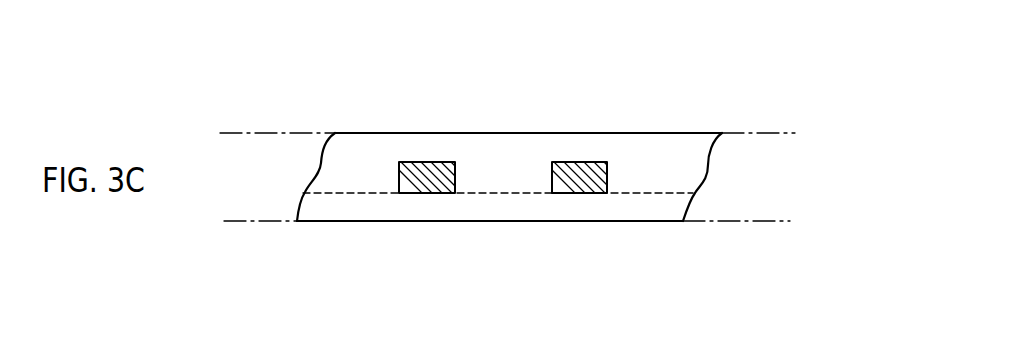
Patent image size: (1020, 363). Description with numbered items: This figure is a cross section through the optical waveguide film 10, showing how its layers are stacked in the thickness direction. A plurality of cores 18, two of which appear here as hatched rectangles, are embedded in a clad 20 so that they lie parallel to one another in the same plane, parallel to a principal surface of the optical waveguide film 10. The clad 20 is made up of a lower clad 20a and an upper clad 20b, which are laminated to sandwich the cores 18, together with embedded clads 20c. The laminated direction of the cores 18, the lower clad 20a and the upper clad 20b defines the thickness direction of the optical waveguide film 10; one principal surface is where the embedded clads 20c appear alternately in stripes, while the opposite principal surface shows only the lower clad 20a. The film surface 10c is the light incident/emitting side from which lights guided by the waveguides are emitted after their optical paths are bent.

The optical waveguide film 10 is at (507, 118).
The film surface 10c is at (500, 221).
The core 18 is at (431, 162).
The clad 20 is at (668, 145).
The lower clad 20a is at (675, 207).
The upper clad 20b is at (700, 147).
The embedded clad 20c is at (526, 183).